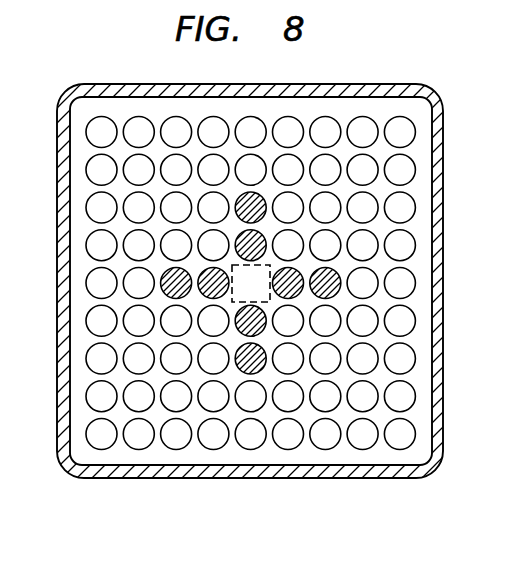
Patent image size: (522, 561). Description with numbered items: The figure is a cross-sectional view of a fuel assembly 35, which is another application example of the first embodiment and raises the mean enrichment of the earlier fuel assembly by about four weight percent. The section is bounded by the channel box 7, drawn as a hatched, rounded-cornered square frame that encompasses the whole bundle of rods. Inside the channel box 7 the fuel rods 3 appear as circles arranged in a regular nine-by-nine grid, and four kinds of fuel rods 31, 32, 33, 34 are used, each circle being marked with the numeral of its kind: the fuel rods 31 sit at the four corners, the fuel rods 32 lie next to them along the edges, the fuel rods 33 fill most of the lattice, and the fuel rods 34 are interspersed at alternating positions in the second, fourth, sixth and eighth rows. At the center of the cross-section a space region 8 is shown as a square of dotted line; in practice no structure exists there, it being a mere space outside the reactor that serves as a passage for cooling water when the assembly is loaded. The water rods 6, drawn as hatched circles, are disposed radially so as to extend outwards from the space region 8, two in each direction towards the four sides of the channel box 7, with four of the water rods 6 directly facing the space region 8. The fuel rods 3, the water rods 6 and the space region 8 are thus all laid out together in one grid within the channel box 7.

The fuel assembly 35 is at (230, 245).
The channel box 7 is at (57, 236).
The fuel rods 3 is at (415, 170).
The water rods 6 is at (333, 293).
The space region 8 is at (232, 302).
The fuel rod 31 is at (250, 283).
The fuel rod 32 is at (250, 283).
The fuel rod 33 is at (250, 283).
The fuel rod 34 is at (250, 282).